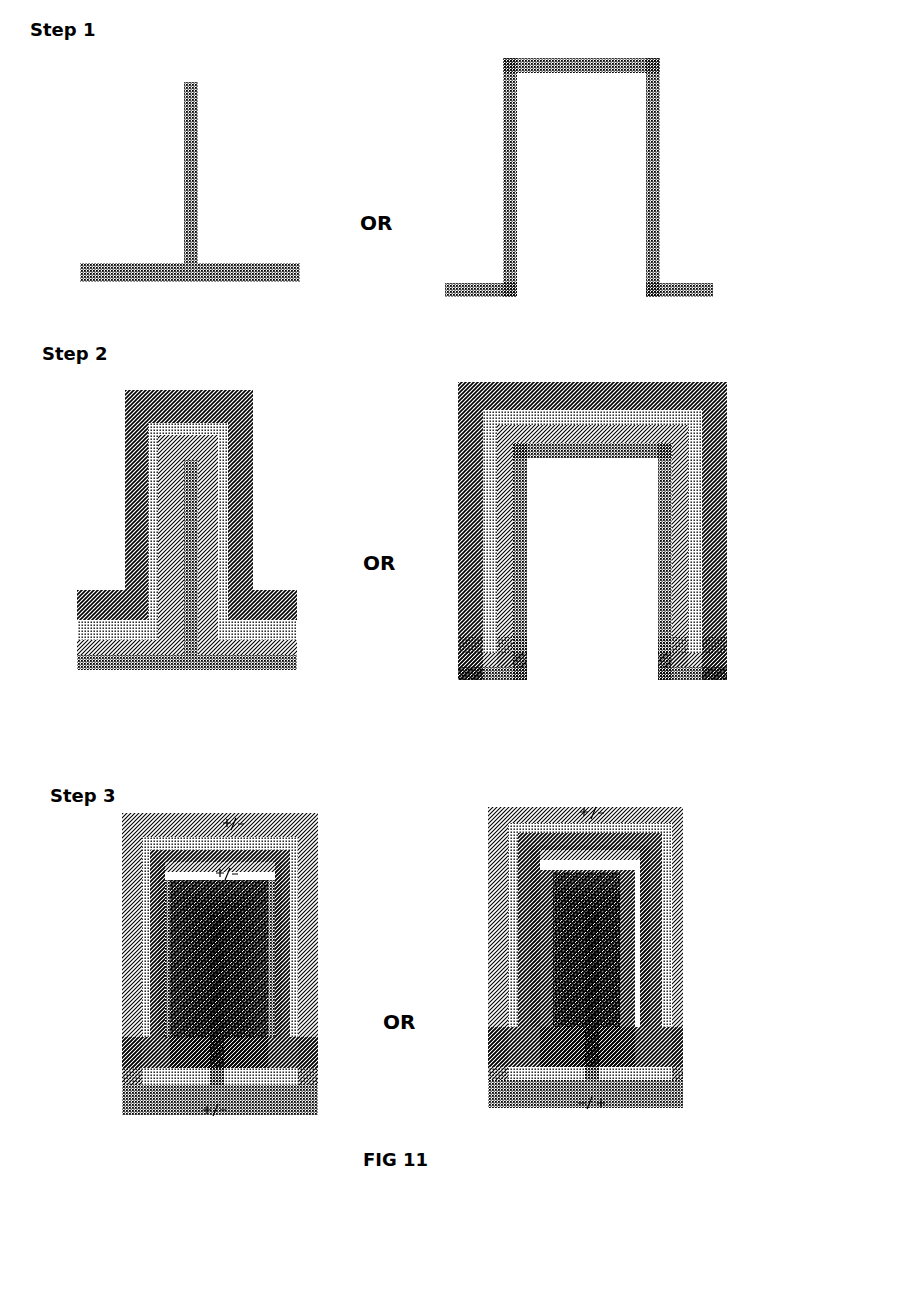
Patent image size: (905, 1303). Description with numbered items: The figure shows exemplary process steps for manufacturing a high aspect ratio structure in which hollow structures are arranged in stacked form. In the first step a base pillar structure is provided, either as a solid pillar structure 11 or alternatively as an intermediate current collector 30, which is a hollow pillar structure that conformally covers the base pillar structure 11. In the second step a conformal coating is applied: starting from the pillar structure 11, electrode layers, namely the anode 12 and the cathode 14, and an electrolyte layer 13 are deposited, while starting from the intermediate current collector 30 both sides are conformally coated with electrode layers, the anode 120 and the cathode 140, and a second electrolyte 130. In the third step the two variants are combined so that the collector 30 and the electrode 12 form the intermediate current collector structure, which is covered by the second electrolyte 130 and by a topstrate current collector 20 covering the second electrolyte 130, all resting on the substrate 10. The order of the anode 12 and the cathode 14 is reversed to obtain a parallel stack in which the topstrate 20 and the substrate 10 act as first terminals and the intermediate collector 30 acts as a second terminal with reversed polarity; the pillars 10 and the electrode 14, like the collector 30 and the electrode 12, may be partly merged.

The substrate 10 is at (282, 1105).
The base pillar structure 11 is at (183, 203).
The anode 12 is at (137, 468).
The electrolyte layer 13 is at (153, 532).
The cathode 14 is at (173, 603).
The topstrate current collector 20 is at (292, 822).
The intermediate current collector 30 is at (545, 72).
The anode 120 is at (505, 442).
The second electrolyte 130 is at (493, 508).
The cathode 140 is at (478, 570).